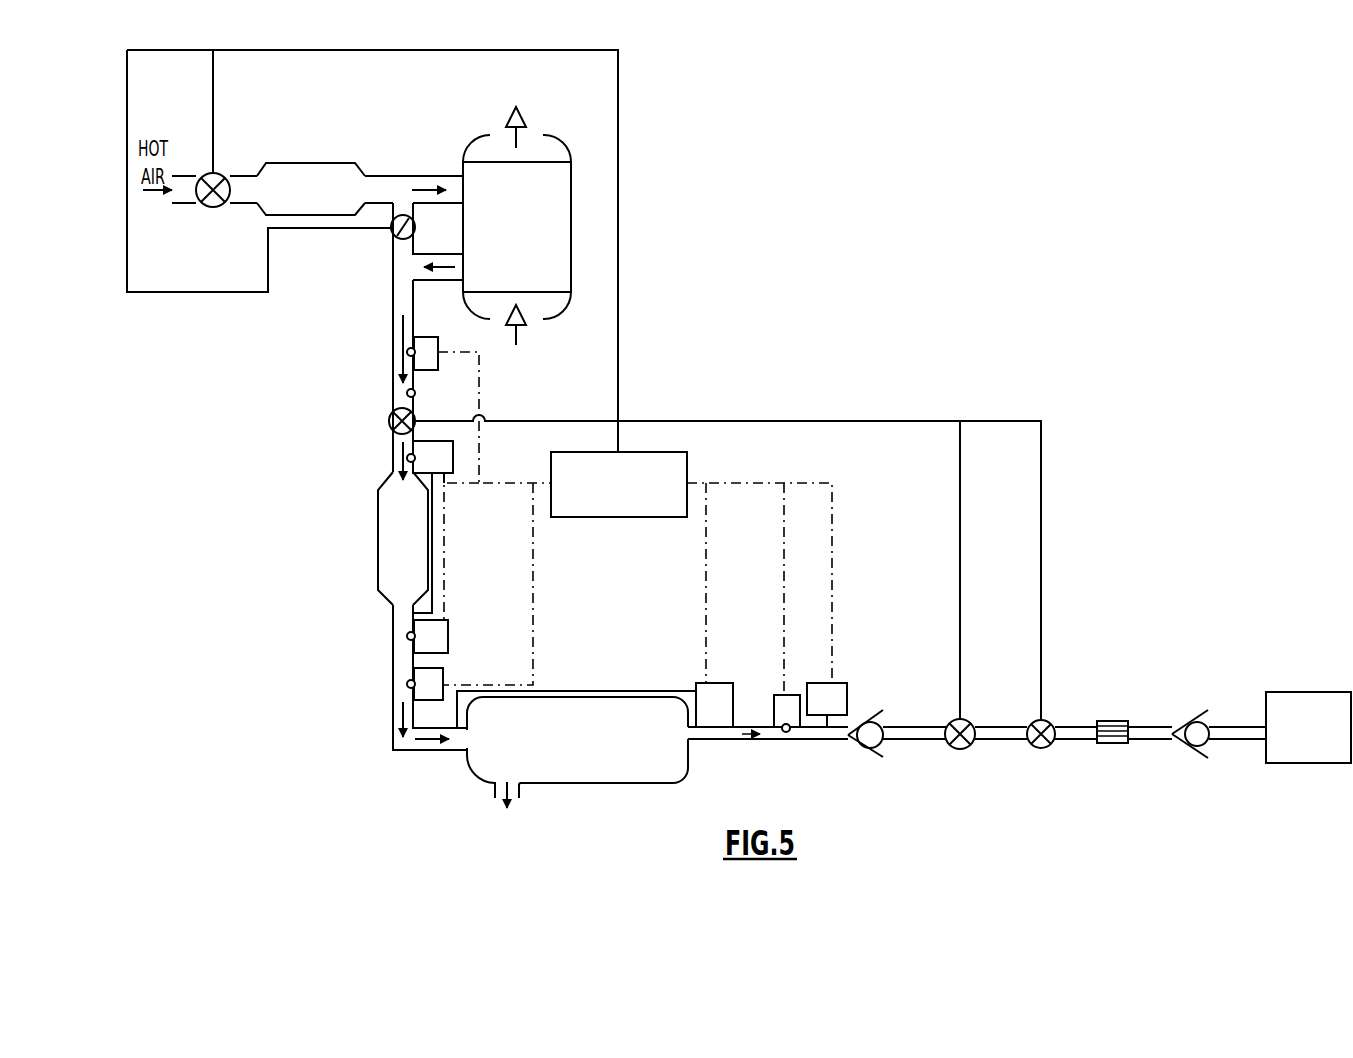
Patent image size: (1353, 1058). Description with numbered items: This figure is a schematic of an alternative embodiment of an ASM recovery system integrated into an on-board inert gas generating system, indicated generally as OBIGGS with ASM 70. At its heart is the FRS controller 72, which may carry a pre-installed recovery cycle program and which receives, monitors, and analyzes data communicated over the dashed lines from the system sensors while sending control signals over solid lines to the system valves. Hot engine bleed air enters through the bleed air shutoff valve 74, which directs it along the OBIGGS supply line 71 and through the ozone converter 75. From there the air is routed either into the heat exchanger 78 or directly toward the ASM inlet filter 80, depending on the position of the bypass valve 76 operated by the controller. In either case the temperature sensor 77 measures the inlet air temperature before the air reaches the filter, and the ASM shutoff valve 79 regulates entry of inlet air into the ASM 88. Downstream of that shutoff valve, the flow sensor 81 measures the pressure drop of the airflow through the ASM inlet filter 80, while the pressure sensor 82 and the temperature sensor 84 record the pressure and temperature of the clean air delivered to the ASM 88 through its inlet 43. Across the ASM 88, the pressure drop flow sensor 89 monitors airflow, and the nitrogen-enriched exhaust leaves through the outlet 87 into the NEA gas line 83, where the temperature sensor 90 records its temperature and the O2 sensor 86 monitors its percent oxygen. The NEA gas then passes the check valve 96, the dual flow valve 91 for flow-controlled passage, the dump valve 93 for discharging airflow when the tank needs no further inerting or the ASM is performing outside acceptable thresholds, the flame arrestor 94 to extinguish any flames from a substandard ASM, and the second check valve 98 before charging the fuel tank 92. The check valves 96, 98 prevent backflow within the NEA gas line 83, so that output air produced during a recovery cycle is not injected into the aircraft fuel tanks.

The OBIGGS with ASM 70 is at (1062, 266).
The OBIGGS supply line 71 is at (393, 327).
The FRS controller 72 is at (597, 517).
The bleed air shutoff valve 74 is at (221, 176).
The ozone converter 75 is at (308, 163).
The bypass valve 76 is at (415, 230).
The temperature sensor 77 is at (430, 337).
The heat exchanger 78 is at (571, 195).
The ASM shutoff valve 79 is at (398, 432).
The ASM inlet filter 80 is at (378, 540).
The flow sensor 81 is at (453, 455).
The pressure sensor 82 is at (448, 635).
The NEA gas line 83 is at (817, 740).
The temperature sensor 84 is at (443, 678).
The O2 sensor 86 is at (845, 683).
The outlet 87 is at (688, 740).
The ASM 88 is at (660, 768).
The pressure drop flow sensor 89 is at (696, 683).
The temperature sensor 90 is at (776, 695).
The dual flow valve 91 is at (968, 722).
The fuel tank 92 is at (1312, 692).
The dump valve 93 is at (1049, 722).
The flame arrestor 94 is at (1115, 721).
The check valve 96 is at (880, 712).
The check valve 98 is at (1208, 710).
The ASM inlet 43 is at (393, 728).